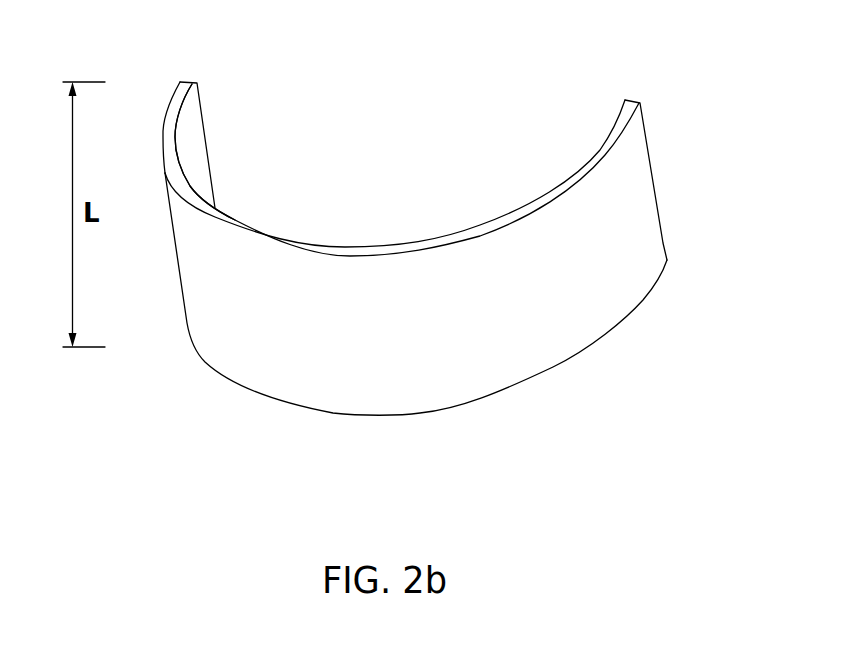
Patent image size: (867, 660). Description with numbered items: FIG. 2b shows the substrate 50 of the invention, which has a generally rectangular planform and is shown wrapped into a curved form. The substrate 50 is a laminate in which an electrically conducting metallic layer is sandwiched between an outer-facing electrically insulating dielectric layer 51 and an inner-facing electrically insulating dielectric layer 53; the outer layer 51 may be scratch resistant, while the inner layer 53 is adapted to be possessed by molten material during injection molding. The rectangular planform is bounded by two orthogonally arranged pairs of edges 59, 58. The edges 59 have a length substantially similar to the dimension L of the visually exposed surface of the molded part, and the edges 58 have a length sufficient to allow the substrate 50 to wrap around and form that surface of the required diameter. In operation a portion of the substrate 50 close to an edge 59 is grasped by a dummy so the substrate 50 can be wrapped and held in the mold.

The substrate 50 is at (464, 251).
The outer-facing electrically insulating dielectric layer 51 is at (617, 266).
The inner-facing electrically insulating dielectric layer 53 is at (192, 168).
The edges 58 is at (370, 245).
The edges 59 is at (200, 112).